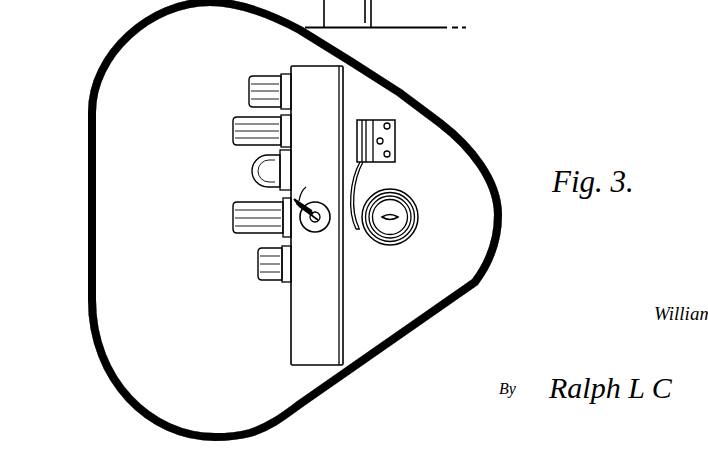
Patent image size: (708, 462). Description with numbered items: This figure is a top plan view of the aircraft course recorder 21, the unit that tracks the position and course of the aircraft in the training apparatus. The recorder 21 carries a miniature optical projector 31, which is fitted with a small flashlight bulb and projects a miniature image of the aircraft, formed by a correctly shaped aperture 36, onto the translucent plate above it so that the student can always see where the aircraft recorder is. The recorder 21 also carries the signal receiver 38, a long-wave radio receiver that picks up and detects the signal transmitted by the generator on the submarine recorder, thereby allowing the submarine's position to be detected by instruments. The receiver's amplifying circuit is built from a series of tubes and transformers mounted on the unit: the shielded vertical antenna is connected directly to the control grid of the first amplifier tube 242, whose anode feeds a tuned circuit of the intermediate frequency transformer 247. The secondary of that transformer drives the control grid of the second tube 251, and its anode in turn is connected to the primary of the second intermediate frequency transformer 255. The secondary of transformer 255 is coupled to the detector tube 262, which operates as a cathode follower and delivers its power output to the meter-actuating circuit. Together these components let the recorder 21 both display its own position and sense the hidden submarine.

The aircraft course recorder 21 is at (206, 323).
The signal receiver 38 is at (326, 295).
The tube 262 is at (250, 90).
The intermediate frequency transformer 255 is at (235, 128).
The tube 251 is at (254, 170).
The intermediate frequency transformer 247 is at (243, 212).
The first amplifier tube 242 is at (264, 260).
The aperture 36 is at (373, 197).
The miniature optical projector 31 is at (398, 221).